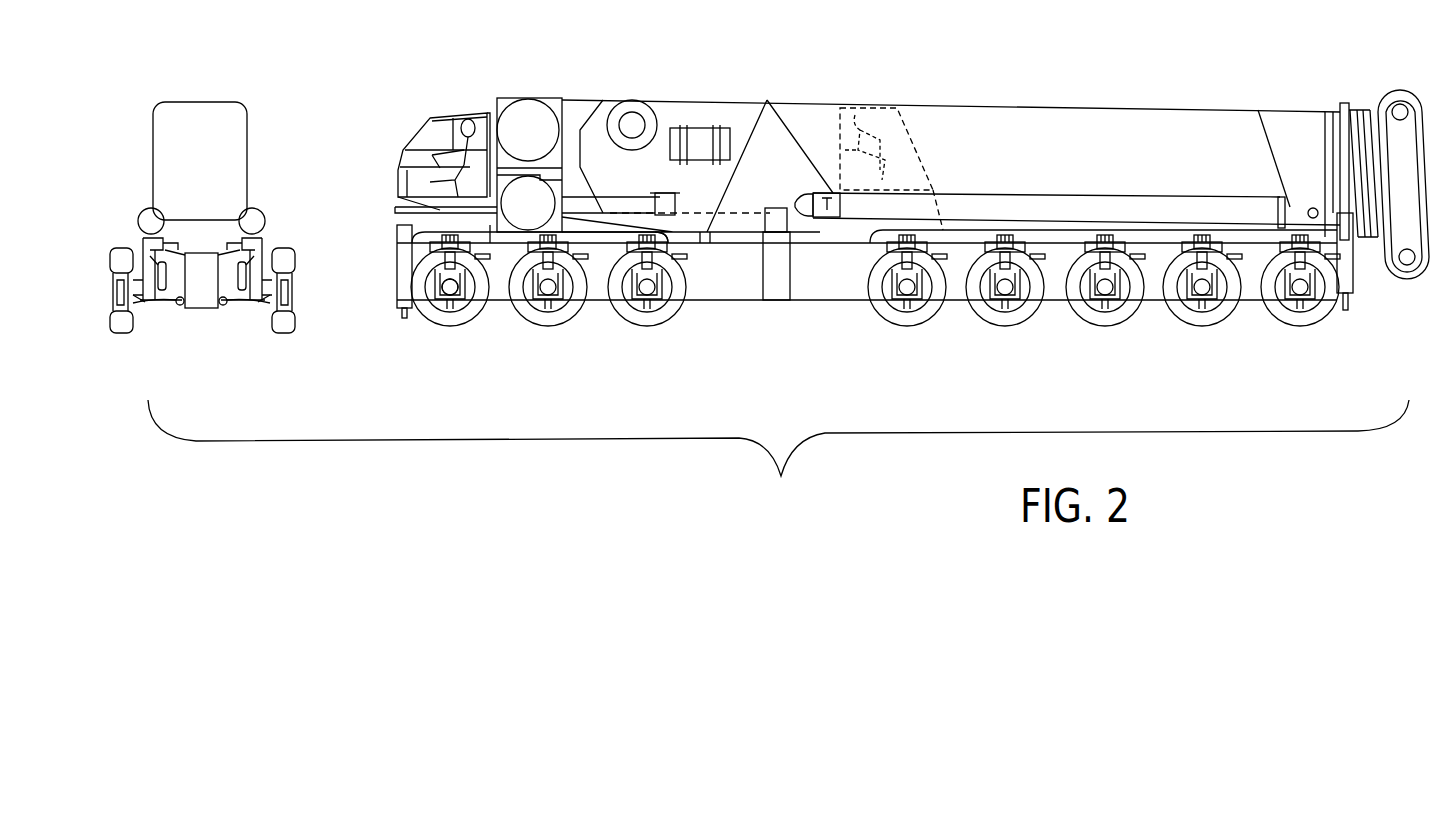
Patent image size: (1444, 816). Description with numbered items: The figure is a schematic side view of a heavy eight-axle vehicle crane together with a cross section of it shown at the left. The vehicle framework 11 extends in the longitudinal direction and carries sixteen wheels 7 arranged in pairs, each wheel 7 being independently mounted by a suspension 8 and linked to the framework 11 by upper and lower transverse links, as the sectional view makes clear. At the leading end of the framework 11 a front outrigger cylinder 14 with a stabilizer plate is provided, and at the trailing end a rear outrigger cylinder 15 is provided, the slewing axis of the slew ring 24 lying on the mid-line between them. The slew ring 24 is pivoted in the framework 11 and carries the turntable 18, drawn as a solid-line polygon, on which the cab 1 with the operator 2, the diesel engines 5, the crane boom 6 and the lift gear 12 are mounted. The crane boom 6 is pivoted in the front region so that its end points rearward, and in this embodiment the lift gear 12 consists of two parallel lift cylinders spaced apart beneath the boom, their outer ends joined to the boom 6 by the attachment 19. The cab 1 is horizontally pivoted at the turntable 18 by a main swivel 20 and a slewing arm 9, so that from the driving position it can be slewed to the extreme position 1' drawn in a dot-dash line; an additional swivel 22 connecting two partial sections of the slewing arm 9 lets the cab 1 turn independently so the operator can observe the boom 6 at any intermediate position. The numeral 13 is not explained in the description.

The cab 1 is at (442, 141).
The slewed cab position 1' is at (886, 108).
The operator 2 is at (470, 125).
The engine 5 is at (512, 193).
The crane boom 6 is at (215, 118).
The wheel 7 is at (433, 316).
The suspension 8 is at (1108, 300).
The slewing arm 9 is at (580, 200).
The vehicle framework 11 is at (204, 295).
The lift gear 12 is at (140, 226).
The axle hub 13 is at (452, 303).
The front outrigger cylinder 14 is at (403, 288).
The rear outrigger cylinder 15 is at (1350, 282).
The turntable 18 is at (765, 135).
The attachment 19 is at (1310, 208).
The main swivel 20 is at (675, 207).
The additional swivel 22 is at (492, 233).
The slew ring 24 is at (745, 235).